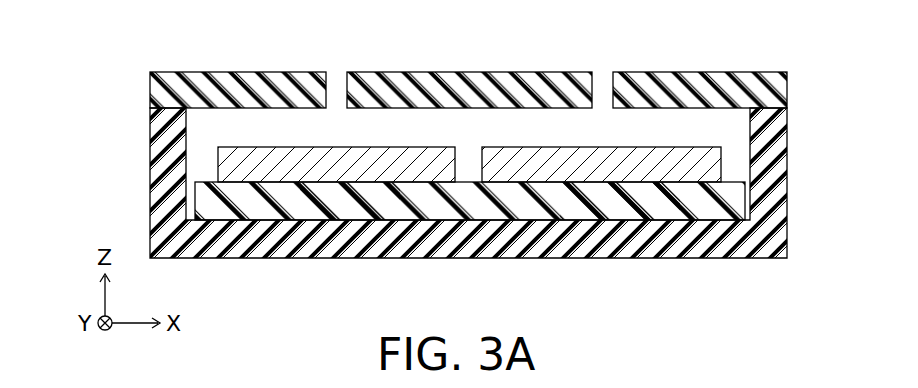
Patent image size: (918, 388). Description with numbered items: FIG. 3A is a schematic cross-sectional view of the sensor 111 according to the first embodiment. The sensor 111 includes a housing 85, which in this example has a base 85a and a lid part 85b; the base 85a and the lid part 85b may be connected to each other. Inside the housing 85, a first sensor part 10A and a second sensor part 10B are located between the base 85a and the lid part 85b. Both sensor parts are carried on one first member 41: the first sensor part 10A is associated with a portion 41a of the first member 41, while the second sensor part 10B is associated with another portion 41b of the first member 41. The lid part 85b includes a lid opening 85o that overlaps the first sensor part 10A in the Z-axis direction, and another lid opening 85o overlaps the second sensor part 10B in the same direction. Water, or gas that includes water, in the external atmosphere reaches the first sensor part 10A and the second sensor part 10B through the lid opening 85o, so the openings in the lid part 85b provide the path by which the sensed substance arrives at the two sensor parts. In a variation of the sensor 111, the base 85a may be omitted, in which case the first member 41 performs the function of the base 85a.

The sensor 111 is at (450, 170).
The housing 85 is at (407, 142).
The base 85a is at (160, 203).
The lid part 85b is at (158, 99).
The lid opening 85o is at (332, 88).
The first member 41 is at (470, 247).
The portion of the first member 41a is at (612, 202).
The another portion of the first member 41b is at (343, 202).
The first sensor part 10A is at (577, 165).
The second sensor part 10B is at (347, 163).